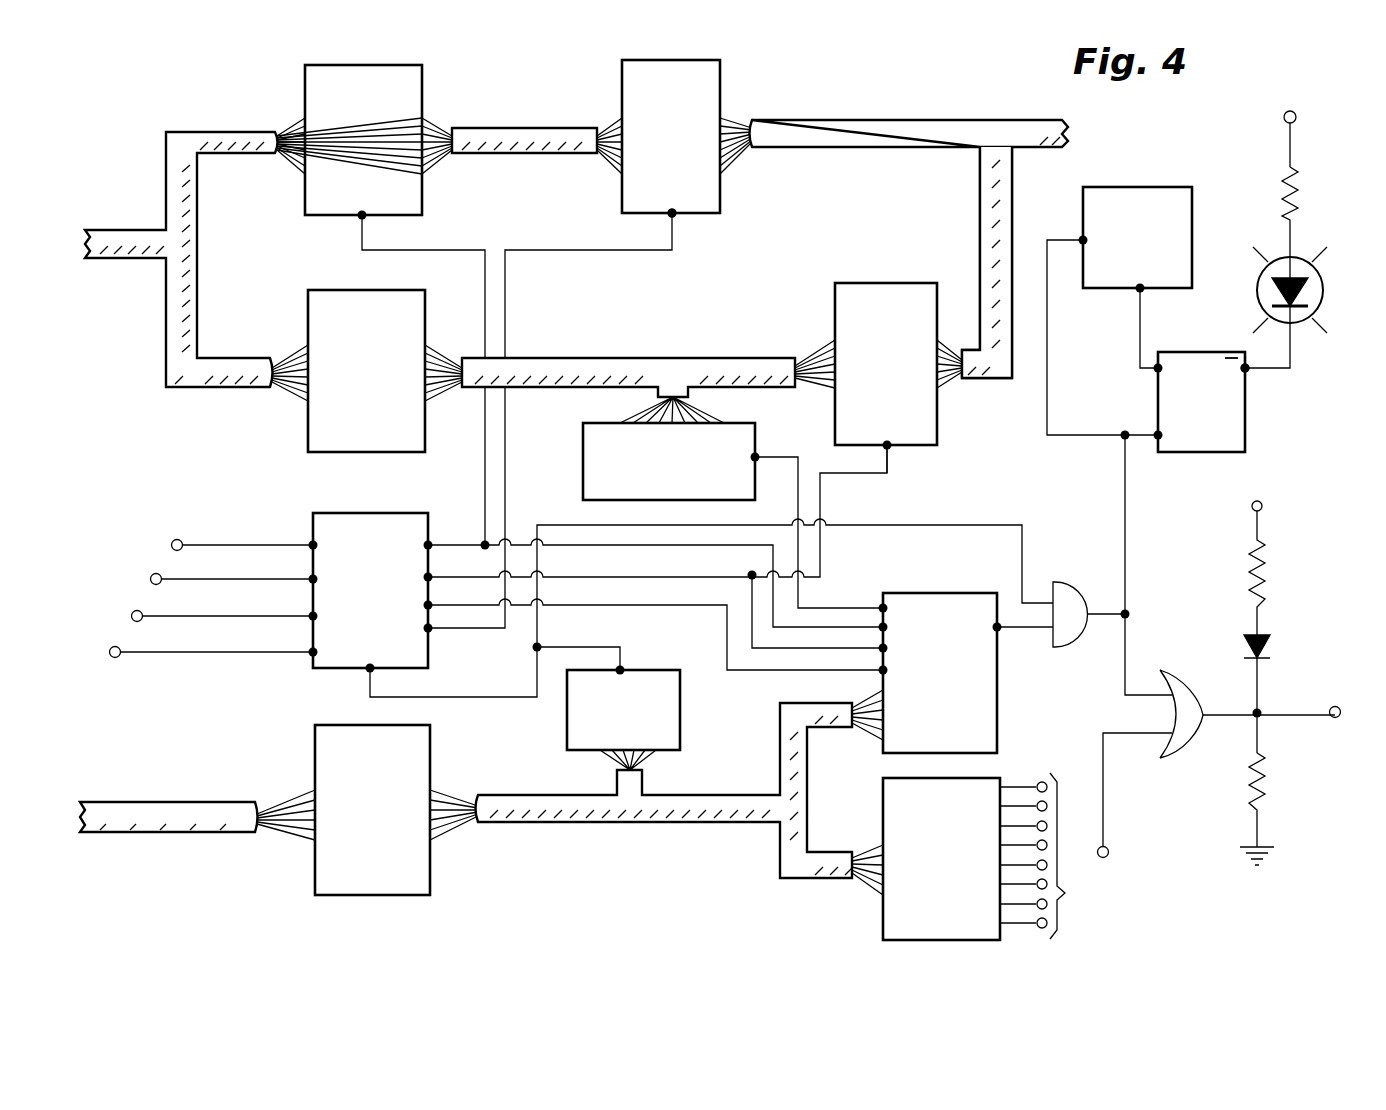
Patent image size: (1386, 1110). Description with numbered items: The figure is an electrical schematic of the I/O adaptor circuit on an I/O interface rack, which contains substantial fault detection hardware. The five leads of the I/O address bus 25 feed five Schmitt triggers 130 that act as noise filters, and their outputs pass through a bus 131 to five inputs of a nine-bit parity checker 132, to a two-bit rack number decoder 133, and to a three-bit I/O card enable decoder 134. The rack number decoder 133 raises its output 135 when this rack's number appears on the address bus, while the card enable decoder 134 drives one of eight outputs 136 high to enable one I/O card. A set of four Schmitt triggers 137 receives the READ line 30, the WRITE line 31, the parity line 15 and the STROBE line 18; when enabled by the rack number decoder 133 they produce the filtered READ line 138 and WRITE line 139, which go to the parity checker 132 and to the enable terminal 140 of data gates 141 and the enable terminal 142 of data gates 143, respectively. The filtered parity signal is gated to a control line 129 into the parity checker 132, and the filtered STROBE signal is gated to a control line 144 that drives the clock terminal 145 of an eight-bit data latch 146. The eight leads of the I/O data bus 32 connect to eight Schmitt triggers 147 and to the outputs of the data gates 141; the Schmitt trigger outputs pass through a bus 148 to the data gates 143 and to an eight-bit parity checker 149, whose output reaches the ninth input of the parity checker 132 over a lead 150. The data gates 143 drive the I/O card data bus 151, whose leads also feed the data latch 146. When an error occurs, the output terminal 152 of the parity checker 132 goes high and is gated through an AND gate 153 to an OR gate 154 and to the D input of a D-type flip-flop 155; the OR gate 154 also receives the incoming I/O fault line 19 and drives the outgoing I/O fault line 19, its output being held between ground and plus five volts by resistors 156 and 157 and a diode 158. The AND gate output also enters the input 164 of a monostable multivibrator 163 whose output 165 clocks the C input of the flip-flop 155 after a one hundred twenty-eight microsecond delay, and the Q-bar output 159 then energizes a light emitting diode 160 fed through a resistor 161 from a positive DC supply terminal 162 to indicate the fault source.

The I/O data bus 32 is at (130, 228).
The data gates 141 is at (425, 90).
The data latch 146 is at (722, 82).
The I/O card data bus 151 is at (920, 118).
The enable terminal 140 is at (352, 223).
The control line 144 is at (530, 250).
The clock terminal 145 is at (678, 218).
The data gates 143 is at (878, 282).
The Schmitt triggers 147 is at (306, 304).
The bus 148 is at (632, 357).
The parity checker 149 is at (582, 447).
The lead 150 is at (784, 456).
The enable terminal 142 is at (893, 450).
The input 164 is at (1078, 236).
The monostable multivibrator 163 is at (1188, 188).
The output 165 is at (1145, 292).
The positive DC supply terminal 162 is at (1294, 110).
The resistor 161 is at (1288, 176).
The light emitting diode 160 is at (1326, 310).
The D-type flip-flop 155 is at (1204, 402).
The Q-bar output 159 is at (1250, 372).
The Schmitt triggers 137 is at (350, 511).
The READ line 138 is at (428, 540).
The WRITE line 139 is at (482, 574).
The control line 129 is at (562, 605).
The READ line 30 is at (178, 538).
The WRITE line 31 is at (158, 572).
The parity line 15 is at (138, 609).
The STROBE line 18 is at (116, 645).
The output 135 is at (624, 667).
The rack number decoder 133 is at (682, 726).
The Schmitt triggers 130 is at (432, 866).
The I/O address bus 25 is at (185, 798).
The bus 131 is at (632, 824).
The parity checker 132 is at (999, 694).
The output terminal 152 is at (1004, 632).
The AND gate 153 is at (1068, 580).
The OR gate 154 is at (1182, 678).
The I/O card enable decoder 134 is at (882, 912).
The outputs 136 is at (1068, 896).
The I/O fault line 19 is at (1340, 704).
The resistor 156 is at (1267, 561).
The diode 158 is at (1272, 646).
The resistor 157 is at (1268, 781).